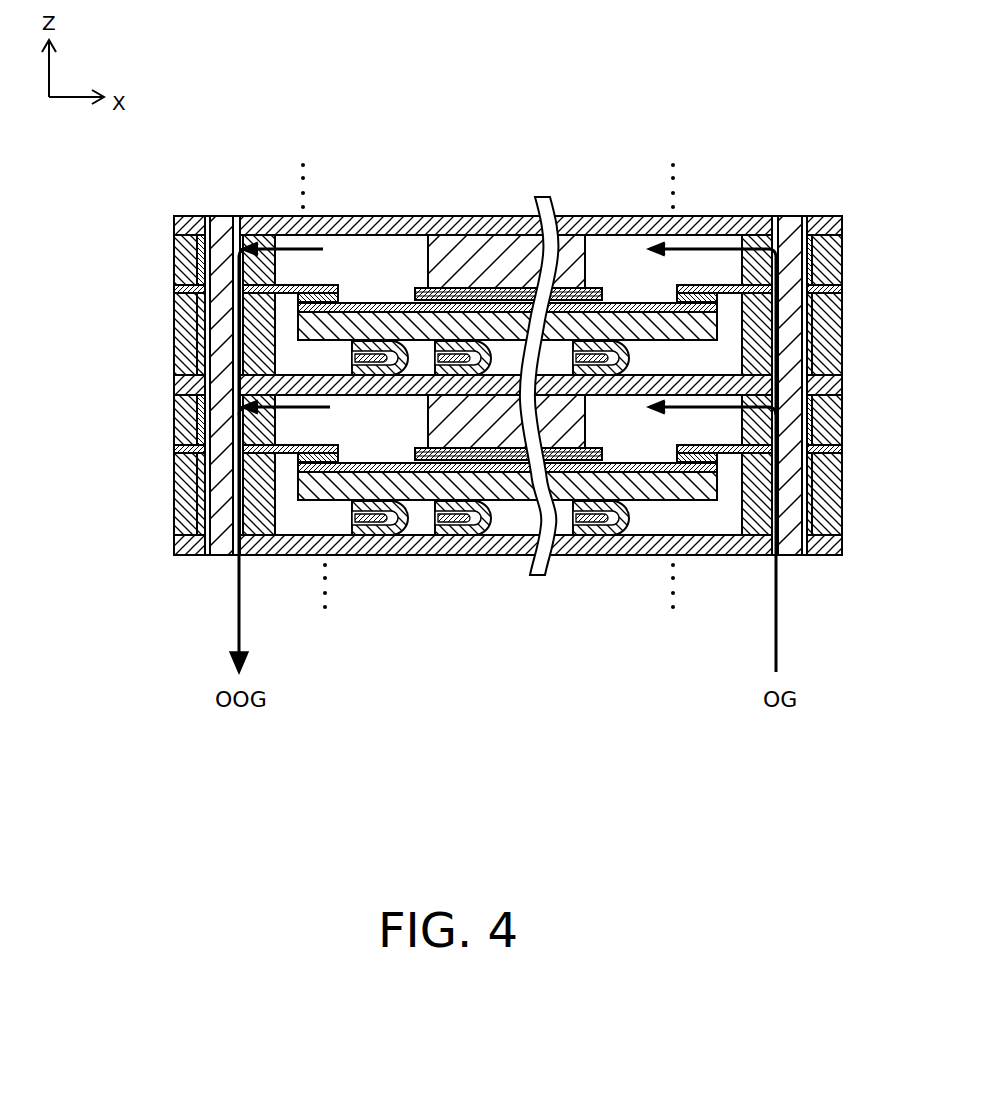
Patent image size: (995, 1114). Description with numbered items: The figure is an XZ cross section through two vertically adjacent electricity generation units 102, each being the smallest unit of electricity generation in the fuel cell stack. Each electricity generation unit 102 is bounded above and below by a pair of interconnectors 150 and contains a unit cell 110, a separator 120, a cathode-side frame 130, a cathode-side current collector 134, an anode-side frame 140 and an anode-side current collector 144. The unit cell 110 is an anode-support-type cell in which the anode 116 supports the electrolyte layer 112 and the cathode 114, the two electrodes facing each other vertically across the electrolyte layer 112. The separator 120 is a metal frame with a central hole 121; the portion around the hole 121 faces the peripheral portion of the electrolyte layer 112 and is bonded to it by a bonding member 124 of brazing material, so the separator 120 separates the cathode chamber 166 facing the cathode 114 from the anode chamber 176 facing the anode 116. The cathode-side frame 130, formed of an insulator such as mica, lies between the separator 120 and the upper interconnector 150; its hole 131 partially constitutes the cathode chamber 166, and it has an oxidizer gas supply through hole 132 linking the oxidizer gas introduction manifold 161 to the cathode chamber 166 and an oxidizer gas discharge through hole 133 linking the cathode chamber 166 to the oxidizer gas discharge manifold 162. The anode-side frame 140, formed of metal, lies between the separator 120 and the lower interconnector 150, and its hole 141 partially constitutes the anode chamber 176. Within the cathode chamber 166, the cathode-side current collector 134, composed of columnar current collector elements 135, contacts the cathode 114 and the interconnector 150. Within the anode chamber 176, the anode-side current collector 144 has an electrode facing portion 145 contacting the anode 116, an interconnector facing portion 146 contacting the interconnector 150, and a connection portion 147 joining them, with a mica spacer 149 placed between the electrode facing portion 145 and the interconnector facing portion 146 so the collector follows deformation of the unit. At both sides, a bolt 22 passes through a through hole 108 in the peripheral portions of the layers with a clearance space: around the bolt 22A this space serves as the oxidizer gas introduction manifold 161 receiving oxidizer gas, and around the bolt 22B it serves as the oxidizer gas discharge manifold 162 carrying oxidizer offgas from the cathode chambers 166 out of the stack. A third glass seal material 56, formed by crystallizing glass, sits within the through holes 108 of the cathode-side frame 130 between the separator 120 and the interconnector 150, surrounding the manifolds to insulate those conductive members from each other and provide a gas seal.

The bolt 22 is at (515, 341).
The bolt 22A is at (790, 150).
The bolt 22B is at (228, 216).
The third glass seal material 56 is at (222, 216).
The electricity generation unit 102 is at (100, 225).
The through hole 108 is at (503, 450).
The unit cell 110 is at (507, 286).
The electrolyte layer 112 is at (390, 302).
The cathode 114 is at (410, 300).
The anode 116 is at (372, 302).
The separator 120 is at (174, 458).
The hole 121 is at (343, 453).
The bonding member 124 is at (346, 290).
The cathode-side frame 130 is at (174, 428).
The hole 131 is at (277, 432).
The oxidizer gas supply through hole 132 is at (752, 216).
The oxidizer gas discharge through hole 133 is at (268, 216).
The cathode-side current collector 134 is at (506, 304).
The current collector element 135 is at (435, 247).
The anode-side frame 140 is at (174, 492).
The hole 141 is at (278, 520).
The anode-side current collector 144 is at (490, 530).
The electrode facing portion 145 is at (414, 540).
The interconnector facing portion 146 is at (450, 548).
The connection portion 147 is at (500, 548).
The spacer 149 is at (368, 553).
The interconnector 150 is at (174, 546).
The oxidizer gas introduction manifold 161 is at (813, 416).
The oxidizer gas discharge manifold 162 is at (208, 555).
The cathode chamber 166 is at (635, 437).
The anode chamber 176 is at (698, 532).